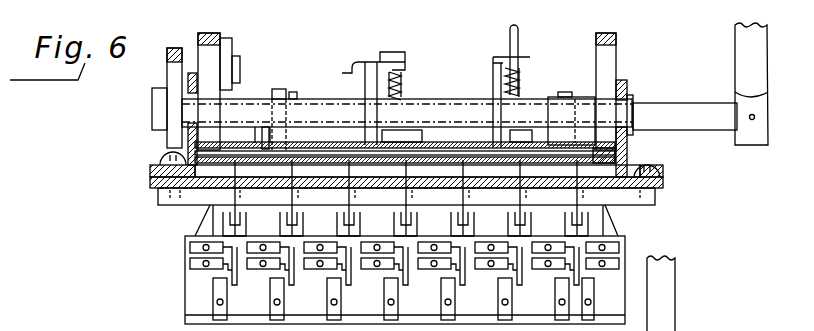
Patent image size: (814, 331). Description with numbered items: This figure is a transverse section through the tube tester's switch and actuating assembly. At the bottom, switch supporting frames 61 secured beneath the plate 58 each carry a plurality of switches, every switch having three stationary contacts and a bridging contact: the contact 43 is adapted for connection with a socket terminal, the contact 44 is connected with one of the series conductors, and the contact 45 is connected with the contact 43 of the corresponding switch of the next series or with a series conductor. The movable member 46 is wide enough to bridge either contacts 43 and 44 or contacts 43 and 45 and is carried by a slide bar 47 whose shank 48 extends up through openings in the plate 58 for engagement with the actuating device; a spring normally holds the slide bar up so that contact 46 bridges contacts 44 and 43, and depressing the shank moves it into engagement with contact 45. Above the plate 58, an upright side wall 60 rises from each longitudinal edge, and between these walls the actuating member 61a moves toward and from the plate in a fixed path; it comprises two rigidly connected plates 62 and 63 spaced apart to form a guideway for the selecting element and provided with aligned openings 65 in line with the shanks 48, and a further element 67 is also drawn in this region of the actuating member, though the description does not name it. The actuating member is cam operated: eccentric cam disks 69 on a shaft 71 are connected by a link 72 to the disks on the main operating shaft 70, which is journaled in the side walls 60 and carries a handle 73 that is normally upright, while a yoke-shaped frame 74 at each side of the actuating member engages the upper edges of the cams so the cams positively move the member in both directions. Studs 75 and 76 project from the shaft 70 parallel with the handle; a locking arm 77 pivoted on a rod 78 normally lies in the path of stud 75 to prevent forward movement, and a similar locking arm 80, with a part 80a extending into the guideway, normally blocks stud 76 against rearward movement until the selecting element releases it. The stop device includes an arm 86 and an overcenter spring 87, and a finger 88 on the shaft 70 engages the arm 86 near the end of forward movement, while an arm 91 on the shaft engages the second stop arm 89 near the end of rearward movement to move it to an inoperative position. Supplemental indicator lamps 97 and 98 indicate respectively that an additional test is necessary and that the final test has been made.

The contact 43 is at (200, 270).
The contact 44 is at (190, 243).
The contact 45 is at (213, 292).
The movable member 46 is at (234, 255).
The slide bar 47 is at (246, 218).
The shank 48 is at (248, 175).
The plate 58 is at (663, 184).
The side wall 60 is at (167, 143).
The switch supporting frame 61 is at (158, 203).
The actuating member 61a is at (628, 156).
The plate 62 is at (406, 198).
The plate 63 is at (340, 142).
The openings 65 is at (292, 149).
The conductor strip 67 is at (458, 152).
The eccentric cam disks 69 is at (203, 52).
The main operating shaft 70 is at (694, 103).
The shaft 71 is at (432, 99).
The link 72 is at (232, 49).
The handle 73 is at (768, 67).
The yoke-shaped frame 74 is at (209, 33).
The stud 75 is at (564, 92).
The stud 76 is at (279, 89).
The locking arm 77 is at (549, 97).
The rod 78 is at (460, 103).
The locking arm 80 is at (293, 92).
The part 80a is at (262, 140).
The arm 86 is at (493, 59).
The spring 87 is at (522, 68).
The finger 88 is at (510, 33).
The stop arm 89 is at (380, 58).
The arm 91 is at (361, 103).
The lamp 97 is at (727, 321).
The lamp 98 is at (661, 293).